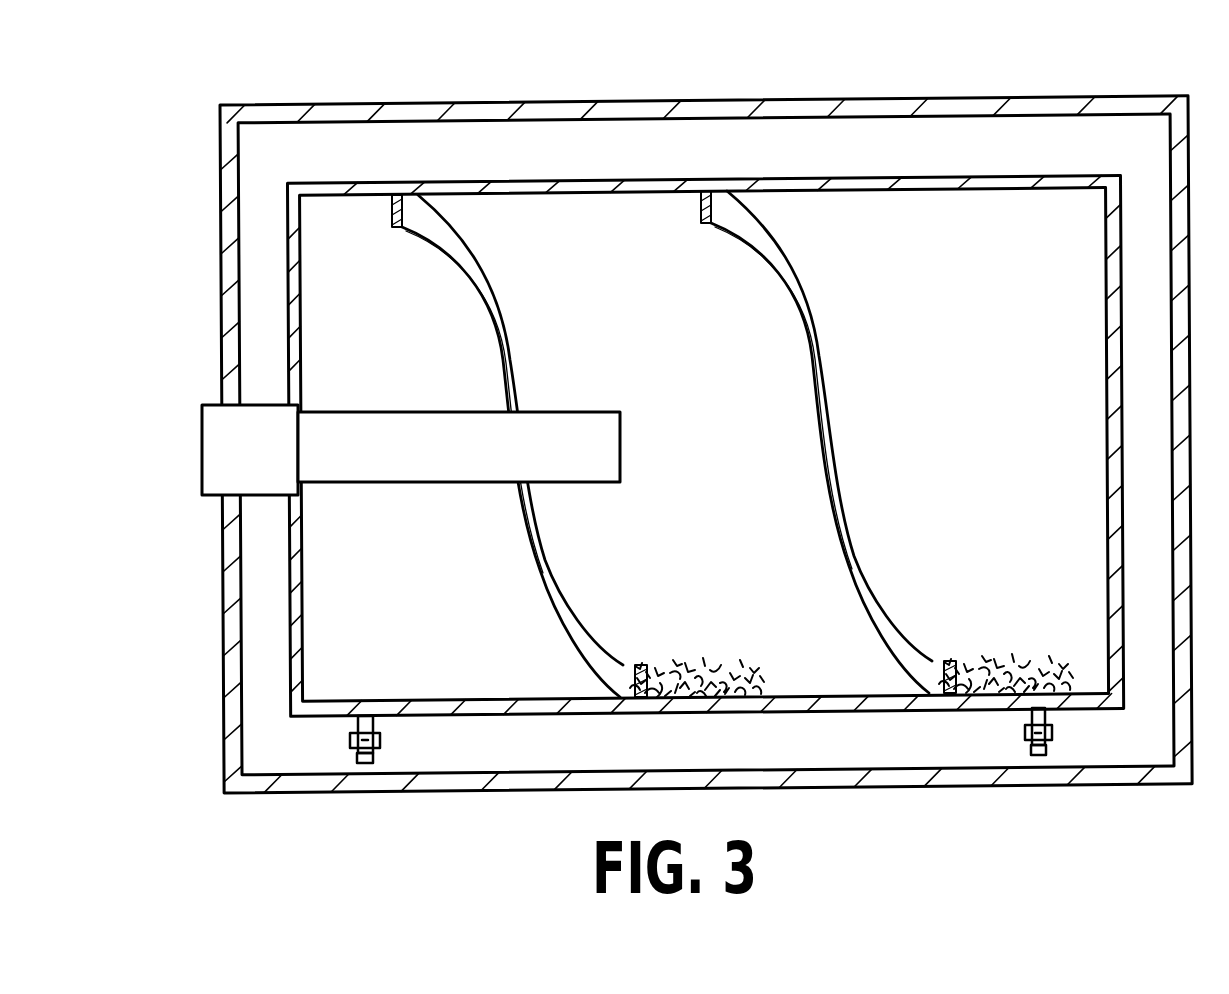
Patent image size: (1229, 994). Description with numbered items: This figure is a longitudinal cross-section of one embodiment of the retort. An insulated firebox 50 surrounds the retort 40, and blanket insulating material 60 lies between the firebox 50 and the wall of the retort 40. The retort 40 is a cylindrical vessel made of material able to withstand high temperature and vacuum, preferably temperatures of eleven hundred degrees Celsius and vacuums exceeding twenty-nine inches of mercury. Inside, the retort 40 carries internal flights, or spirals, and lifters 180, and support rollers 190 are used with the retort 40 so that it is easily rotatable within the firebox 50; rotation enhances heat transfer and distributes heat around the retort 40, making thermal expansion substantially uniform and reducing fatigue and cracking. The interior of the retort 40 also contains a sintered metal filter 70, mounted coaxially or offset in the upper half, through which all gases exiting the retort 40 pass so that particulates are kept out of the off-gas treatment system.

The retort 40 is at (930, 177).
The insulated firebox 50 is at (1122, 97).
The blanket insulating material 60 is at (643, 142).
The sintered metal filter 70 is at (415, 412).
The lifters 180 is at (498, 328).
The support rollers 190 is at (378, 757).